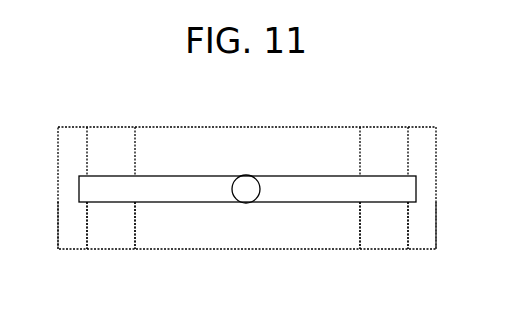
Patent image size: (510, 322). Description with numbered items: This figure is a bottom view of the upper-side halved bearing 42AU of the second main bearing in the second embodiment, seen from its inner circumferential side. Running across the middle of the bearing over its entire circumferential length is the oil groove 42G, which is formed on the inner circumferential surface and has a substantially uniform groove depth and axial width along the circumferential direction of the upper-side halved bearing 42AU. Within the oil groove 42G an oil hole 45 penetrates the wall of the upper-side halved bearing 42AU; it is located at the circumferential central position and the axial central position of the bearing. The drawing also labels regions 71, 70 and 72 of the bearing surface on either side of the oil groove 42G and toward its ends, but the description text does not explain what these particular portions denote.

The housing / frame 71 is at (330, 150).
The upper-side halved bearing 42AU is at (168, 140).
The oil groove 42G is at (175, 190).
The oil hole 45 is at (247, 176).
The support member 70 is at (103, 237).
The end member 72 is at (79, 238).